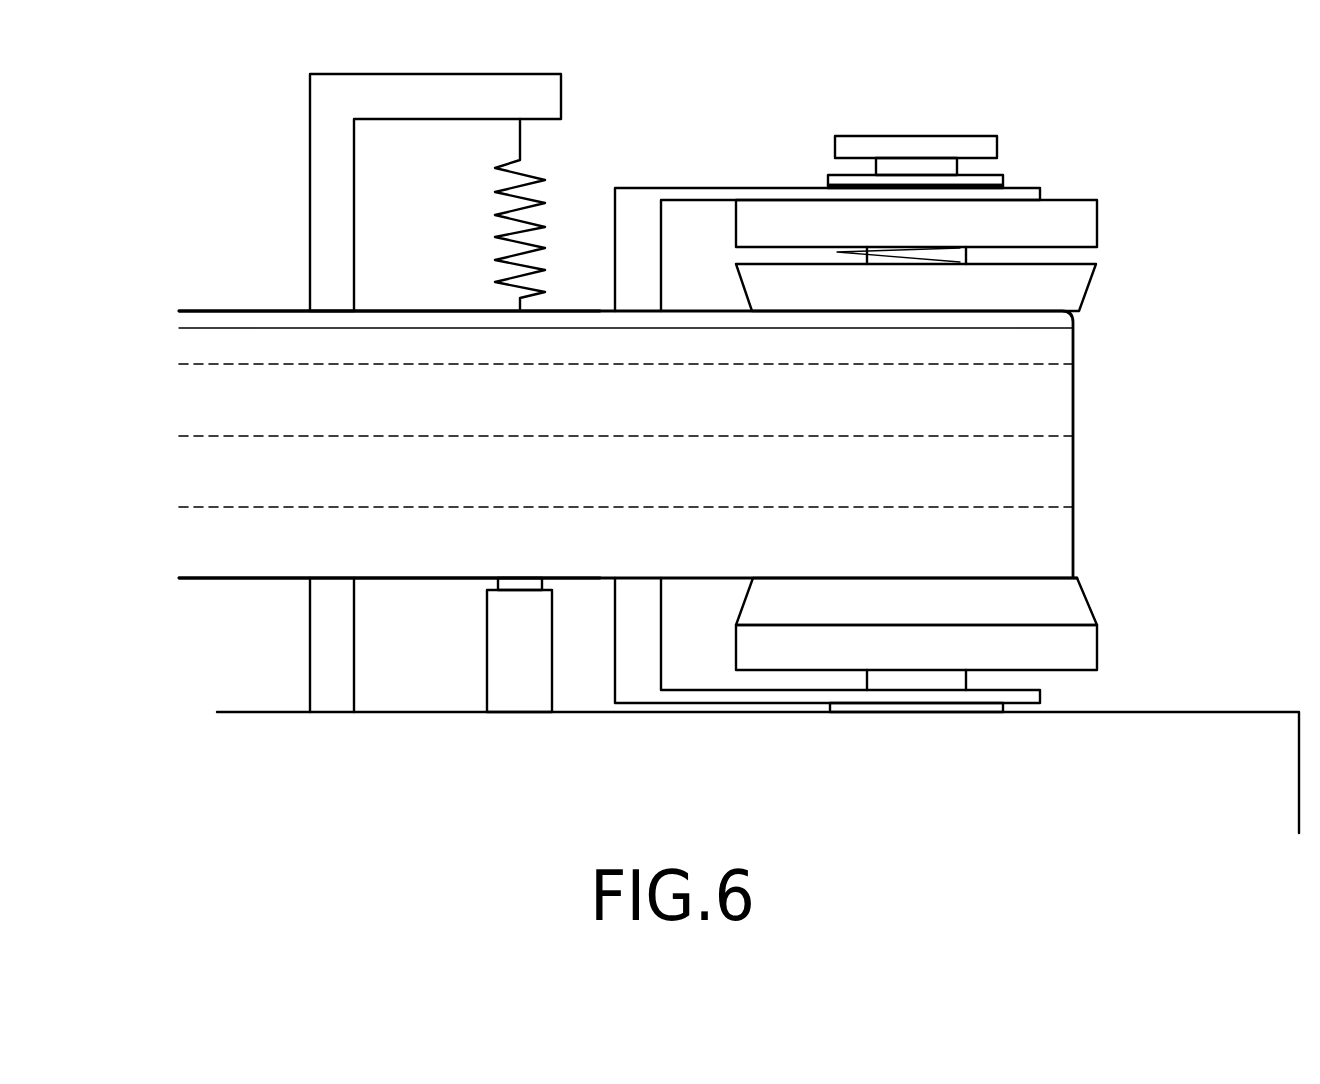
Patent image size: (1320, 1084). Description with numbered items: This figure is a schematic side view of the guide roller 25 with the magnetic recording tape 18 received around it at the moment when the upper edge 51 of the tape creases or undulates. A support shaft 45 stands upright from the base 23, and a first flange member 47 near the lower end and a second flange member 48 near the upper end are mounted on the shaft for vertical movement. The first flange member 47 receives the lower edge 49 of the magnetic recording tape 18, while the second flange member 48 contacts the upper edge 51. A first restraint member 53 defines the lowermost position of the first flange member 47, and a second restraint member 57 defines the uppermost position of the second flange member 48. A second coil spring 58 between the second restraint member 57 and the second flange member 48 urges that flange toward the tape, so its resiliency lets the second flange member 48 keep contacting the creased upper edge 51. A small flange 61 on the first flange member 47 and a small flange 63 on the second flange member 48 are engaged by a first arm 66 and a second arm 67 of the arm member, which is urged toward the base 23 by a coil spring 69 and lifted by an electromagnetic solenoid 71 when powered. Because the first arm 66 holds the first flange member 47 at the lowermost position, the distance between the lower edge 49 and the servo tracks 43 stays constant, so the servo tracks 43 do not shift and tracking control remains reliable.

The magnetic recording tape 18 is at (646, 444).
The base 23 is at (1226, 711).
The guide roller 25 is at (1181, 248).
The servo tracks 43 is at (197, 364).
The support shaft 45 is at (905, 135).
The first flange member 47 is at (1087, 596).
The second flange member 48 is at (1085, 303).
The lower edge 49 is at (200, 578).
The upper edge 51 is at (200, 311).
The first restraint member 53 is at (1097, 635).
The second restraint member 57 is at (1097, 238).
The second coil spring 58 is at (848, 252).
The small flange 61 is at (1003, 705).
The small flange 63 is at (1003, 178).
The first arm 66 is at (710, 703).
The second arm 67 is at (690, 188).
The coil spring 69 is at (495, 192).
The electromagnetic solenoid 71 is at (487, 655).